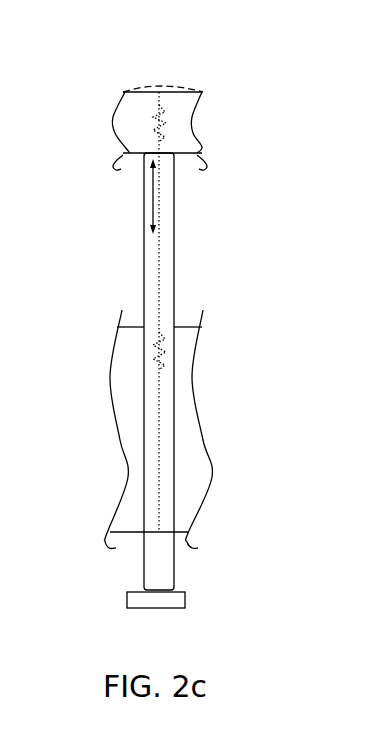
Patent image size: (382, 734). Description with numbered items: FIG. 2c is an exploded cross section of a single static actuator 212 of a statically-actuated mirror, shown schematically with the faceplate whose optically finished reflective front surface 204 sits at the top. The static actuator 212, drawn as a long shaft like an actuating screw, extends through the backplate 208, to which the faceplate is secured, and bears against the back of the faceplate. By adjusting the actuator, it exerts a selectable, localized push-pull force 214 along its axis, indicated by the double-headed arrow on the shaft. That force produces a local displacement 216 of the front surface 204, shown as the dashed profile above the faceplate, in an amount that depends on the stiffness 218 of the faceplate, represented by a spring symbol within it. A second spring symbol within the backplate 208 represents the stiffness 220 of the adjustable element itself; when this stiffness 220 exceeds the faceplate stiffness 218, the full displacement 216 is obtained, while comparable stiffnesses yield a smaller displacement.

The front surface 204 is at (152, 112).
The backplate 208 is at (128, 429).
The static actuator 212 is at (190, 256).
The push-pull force 214 is at (120, 196).
The local displacement 216 is at (179, 78).
The stiffness of the faceplate 218 is at (167, 122).
The stiffness of the adjustable element 220 is at (163, 353).